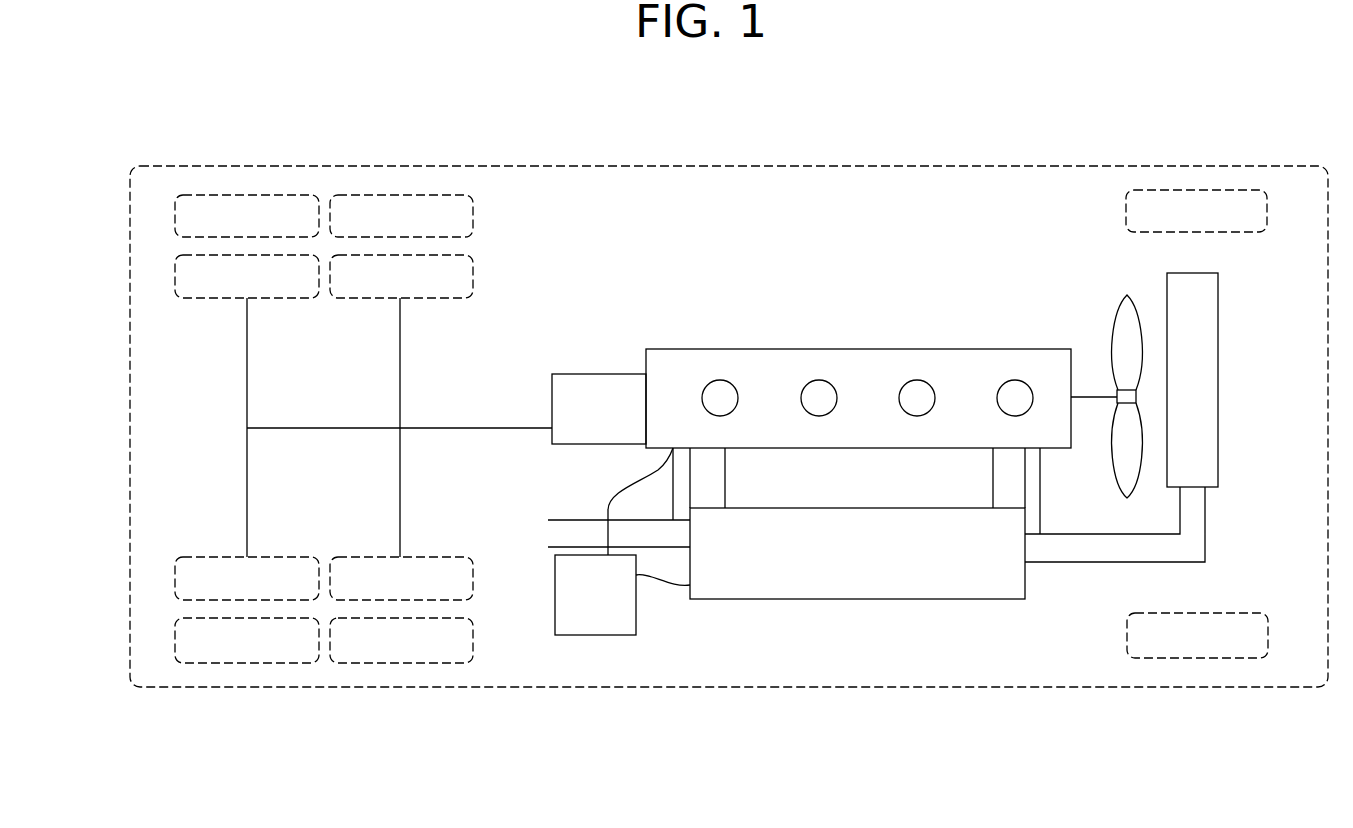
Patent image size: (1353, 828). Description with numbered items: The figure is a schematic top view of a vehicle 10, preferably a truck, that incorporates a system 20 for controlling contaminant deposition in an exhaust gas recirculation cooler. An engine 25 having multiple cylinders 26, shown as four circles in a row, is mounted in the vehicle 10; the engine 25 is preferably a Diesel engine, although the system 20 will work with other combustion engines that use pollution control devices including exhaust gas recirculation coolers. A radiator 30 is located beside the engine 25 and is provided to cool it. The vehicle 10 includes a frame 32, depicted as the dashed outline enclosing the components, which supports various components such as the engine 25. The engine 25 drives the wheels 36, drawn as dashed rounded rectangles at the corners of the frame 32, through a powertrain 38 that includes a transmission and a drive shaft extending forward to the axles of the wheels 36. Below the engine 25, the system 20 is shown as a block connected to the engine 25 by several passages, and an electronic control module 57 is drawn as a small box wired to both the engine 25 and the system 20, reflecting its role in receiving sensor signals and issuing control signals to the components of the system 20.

The vehicle 10 is at (992, 163).
The wheels 36 is at (255, 195).
The frame 32 is at (423, 400).
The powertrain 38 is at (551, 359).
The engine 25 is at (860, 349).
The cylinders 26 is at (721, 380).
The radiator 30 is at (1218, 362).
The system 20 is at (844, 600).
The electronic control module 57 is at (610, 618).